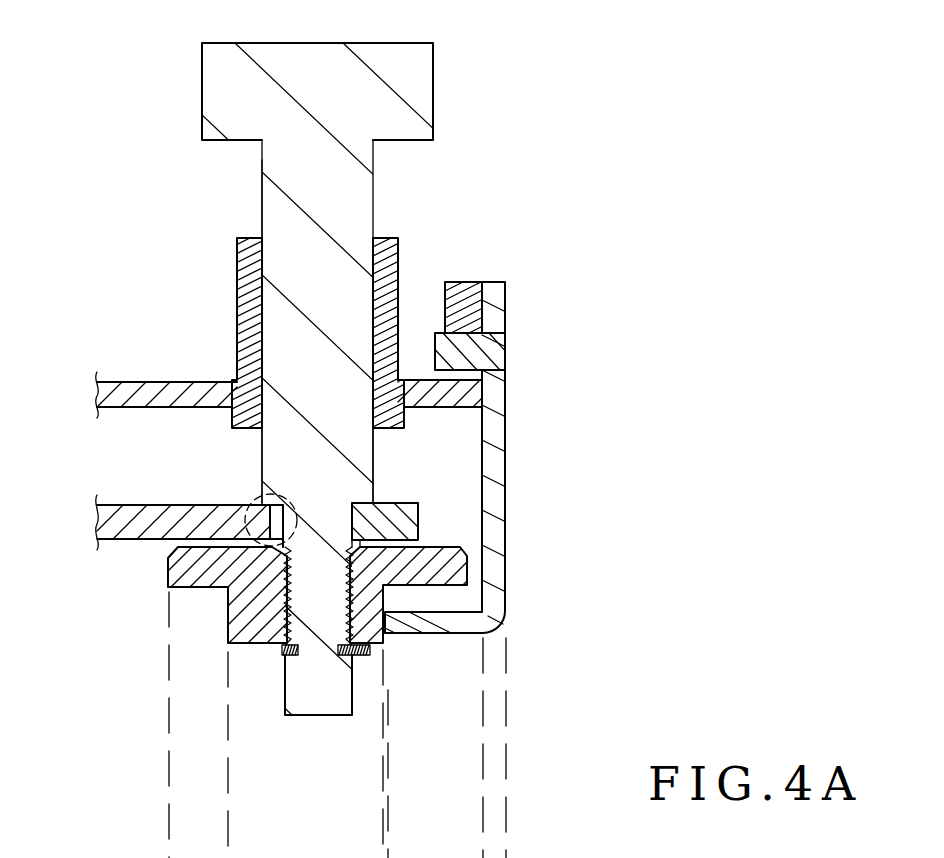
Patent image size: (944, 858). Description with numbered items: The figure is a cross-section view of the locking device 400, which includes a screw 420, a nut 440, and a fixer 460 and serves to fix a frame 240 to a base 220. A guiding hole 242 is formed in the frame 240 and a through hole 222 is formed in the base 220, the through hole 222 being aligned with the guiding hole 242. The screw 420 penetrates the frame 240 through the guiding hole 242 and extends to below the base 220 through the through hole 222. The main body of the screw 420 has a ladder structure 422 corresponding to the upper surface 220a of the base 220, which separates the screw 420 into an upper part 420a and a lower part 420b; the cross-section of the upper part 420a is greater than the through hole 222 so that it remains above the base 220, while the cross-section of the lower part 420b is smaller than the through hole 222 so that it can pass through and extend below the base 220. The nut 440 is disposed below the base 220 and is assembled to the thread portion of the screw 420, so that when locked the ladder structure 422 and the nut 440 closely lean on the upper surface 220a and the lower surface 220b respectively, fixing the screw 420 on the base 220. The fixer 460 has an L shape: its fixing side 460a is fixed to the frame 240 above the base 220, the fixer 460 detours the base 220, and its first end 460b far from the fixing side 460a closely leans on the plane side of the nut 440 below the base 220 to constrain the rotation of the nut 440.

The locking device 400 is at (178, 68).
The screw 420 is at (425, 72).
The upper part 420a is at (318, 447).
The lower part 420b is at (385, 637).
The ladder structure 422 is at (253, 502).
The frame 240 is at (178, 402).
The guiding hole 242 is at (348, 335).
The base 220 is at (153, 528).
The upper surface 220a is at (418, 503).
The lower surface 220b is at (418, 543).
The through hole 222 is at (324, 528).
The nut 440 is at (262, 640).
The fixer 460 is at (503, 622).
The fixing side 460a is at (493, 404).
The first end 460b is at (388, 622).